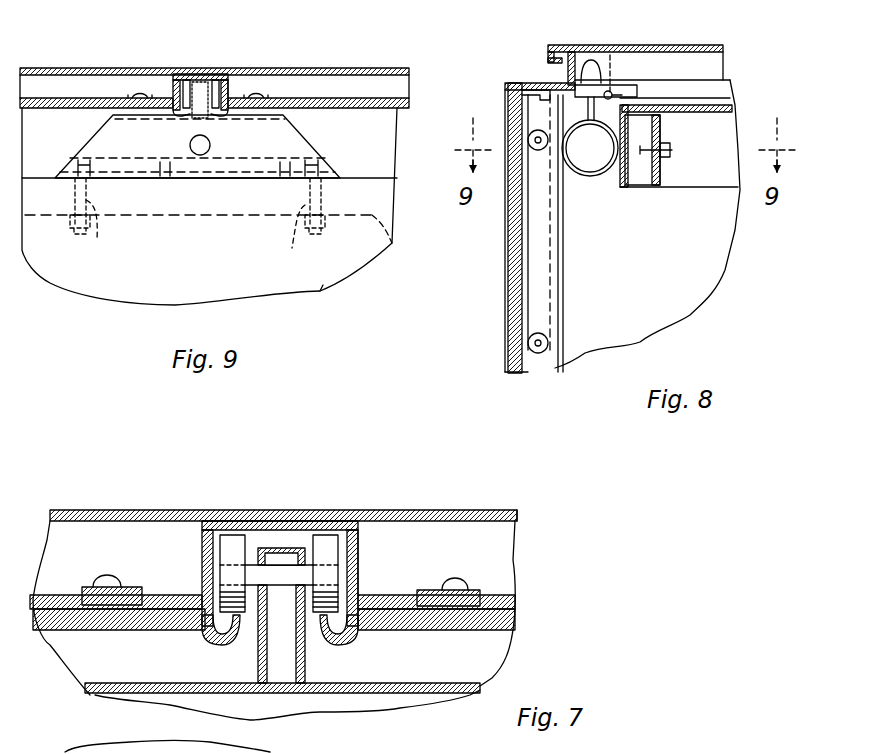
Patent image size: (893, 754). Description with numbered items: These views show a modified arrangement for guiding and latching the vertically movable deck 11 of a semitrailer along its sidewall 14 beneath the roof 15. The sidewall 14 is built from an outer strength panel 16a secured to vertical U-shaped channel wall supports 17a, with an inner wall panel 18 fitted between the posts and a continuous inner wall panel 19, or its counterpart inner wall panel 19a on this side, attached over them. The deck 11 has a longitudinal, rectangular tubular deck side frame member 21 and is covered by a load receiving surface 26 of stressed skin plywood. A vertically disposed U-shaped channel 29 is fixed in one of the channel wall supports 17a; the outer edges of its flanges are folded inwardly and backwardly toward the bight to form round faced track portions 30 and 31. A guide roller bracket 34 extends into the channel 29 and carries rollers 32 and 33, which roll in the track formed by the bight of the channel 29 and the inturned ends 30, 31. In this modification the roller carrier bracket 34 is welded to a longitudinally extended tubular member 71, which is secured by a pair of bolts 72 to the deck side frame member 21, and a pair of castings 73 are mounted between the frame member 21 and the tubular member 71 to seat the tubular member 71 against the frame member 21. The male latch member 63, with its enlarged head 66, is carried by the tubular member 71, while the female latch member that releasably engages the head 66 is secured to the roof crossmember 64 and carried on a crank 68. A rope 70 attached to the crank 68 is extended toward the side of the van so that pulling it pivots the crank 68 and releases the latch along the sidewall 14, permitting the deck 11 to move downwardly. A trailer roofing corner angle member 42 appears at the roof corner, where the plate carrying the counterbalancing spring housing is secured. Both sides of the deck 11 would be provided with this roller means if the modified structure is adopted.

In FIG. 9, the vertically movable deck 11 is at (322, 292).
In FIG. 8, the vertically movable deck 11 is at (695, 192).
In FIG. 9, the sidewall 14 is at (375, 80).
In FIG. 8, the sidewall 14 is at (510, 275).
In FIG. 7, the sidewall 14 is at (470, 524).
In FIG. 8, the roof 15 is at (705, 56).
In FIG. 9, the outer strength panel 16a is at (340, 69).
In FIG. 8, the outer strength panel 16a is at (510, 315).
In FIG. 7, the outer strength panel 16a is at (517, 516).
In FIG. 9, the channel wall support 17a is at (232, 85).
In FIG. 8, the channel wall support 17a is at (507, 243).
In FIG. 7, the channel wall support 17a is at (362, 555).
In FIG. 7, the inner wall panel 18 is at (510, 598).
In FIG. 7, the inner wall panel 19 is at (515, 620).
In FIG. 9, the inner wall panel 19a is at (92, 108).
In FIG. 9, the deck side frame member 21 is at (390, 252).
In FIG. 8, the deck side frame member 21 is at (662, 176).
In FIG. 7, the deck side frame member 21 is at (490, 682).
In FIG. 9, the load receiving surface 26 is at (355, 282).
In FIG. 8, the load receiving surface 26 is at (728, 108).
In FIG. 9, the U-shaped channel 29 is at (174, 78).
In FIG. 8, the U-shaped channel 29 is at (516, 360).
In FIG. 7, the U-shaped channel 29 is at (352, 526).
In FIG. 7, the track portion 30 is at (340, 640).
In FIG. 7, the track portion 31 is at (216, 642).
In FIG. 9, the roller 32 is at (222, 78).
In FIG. 7, the roller 32 is at (232, 545).
In FIG. 9, the roller 33 is at (192, 78).
In FIG. 8, the roller 33 is at (535, 150).
In FIG. 7, the roller 33 is at (325, 545).
In FIG. 9, the guide roller bracket 34 is at (190, 110).
In FIG. 8, the guide roller bracket 34 is at (545, 300).
In FIG. 7, the guide roller bracket 34 is at (305, 658).
In FIG. 8, the trailer roofing corner angle member 42 is at (520, 82).
In FIG. 7, the trailer roofing corner angle member 42 is at (300, 752).
In FIG. 8, the male latch member 63 is at (612, 58).
In FIG. 8, the roof crossmember 64 is at (728, 86).
In FIG. 9, the enlarged head 66 is at (210, 145).
In FIG. 8, the enlarged head 66 is at (596, 62).
In FIG. 8, the crank 68 is at (615, 94).
In FIG. 8, the rope 70 is at (548, 115).
In FIG. 9, the tubular member 71 is at (300, 140).
In FIG. 8, the tubular member 71 is at (592, 185).
In FIG. 9, the bolt 72 is at (197, 225).
In FIG. 8, the bolt 72 is at (655, 152).
In FIG. 9, the casting 73 is at (233, 170).
In FIG. 8, the casting 73 is at (612, 175).